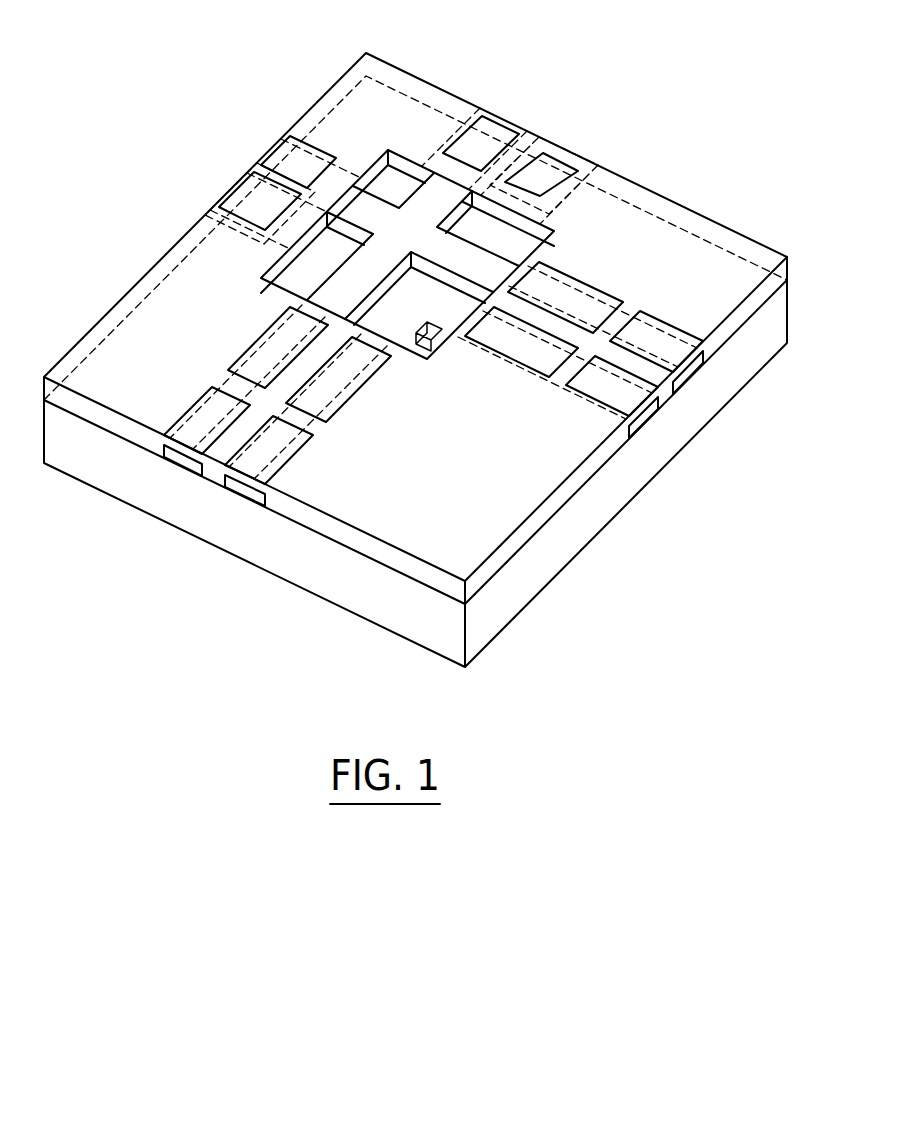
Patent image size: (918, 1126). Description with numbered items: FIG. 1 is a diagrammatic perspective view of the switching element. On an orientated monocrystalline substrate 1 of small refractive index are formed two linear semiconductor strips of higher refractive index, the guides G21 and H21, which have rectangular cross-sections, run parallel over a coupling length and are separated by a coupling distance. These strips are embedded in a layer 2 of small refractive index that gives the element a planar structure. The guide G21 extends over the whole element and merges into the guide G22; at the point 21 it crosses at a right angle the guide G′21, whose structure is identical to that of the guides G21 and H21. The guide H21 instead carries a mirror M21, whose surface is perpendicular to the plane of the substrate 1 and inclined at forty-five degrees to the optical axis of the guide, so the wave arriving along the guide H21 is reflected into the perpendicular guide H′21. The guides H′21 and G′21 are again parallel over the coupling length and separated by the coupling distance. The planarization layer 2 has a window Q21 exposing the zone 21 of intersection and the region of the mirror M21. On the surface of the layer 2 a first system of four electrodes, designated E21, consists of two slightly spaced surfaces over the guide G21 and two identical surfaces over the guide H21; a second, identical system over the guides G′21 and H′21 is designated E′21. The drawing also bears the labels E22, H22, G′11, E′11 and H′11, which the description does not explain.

The substrate 1 is at (510, 600).
The layer 2 is at (532, 527).
The point of intersection 21 is at (414, 223).
The window Q21 is at (384, 146).
The mirror M21 is at (405, 300).
The first system of four electrodes E21 is at (330, 387).
The second system of four electrodes E′21 is at (653, 340).
The guide G21 is at (185, 462).
The guide H21 is at (245, 492).
The guide G′21 is at (692, 378).
The guide H′21 is at (652, 416).
The guide G22 is at (483, 135).
The electrode E22 is at (548, 155).
The contact strip H22 is at (560, 163).
The contact pad G′11 is at (290, 157).
The electrode E′11 is at (238, 187).
The contact strip H′11 is at (230, 199).